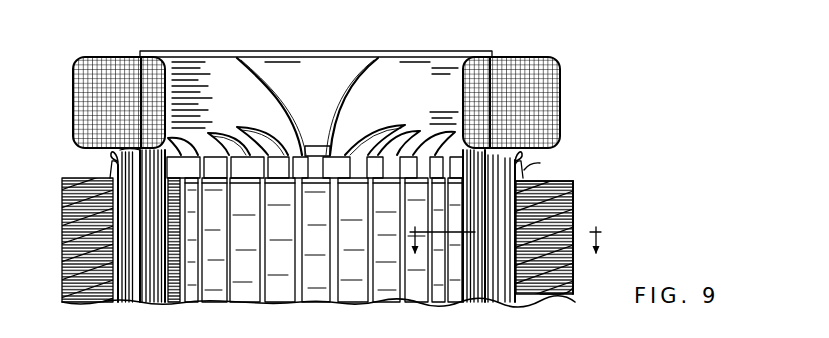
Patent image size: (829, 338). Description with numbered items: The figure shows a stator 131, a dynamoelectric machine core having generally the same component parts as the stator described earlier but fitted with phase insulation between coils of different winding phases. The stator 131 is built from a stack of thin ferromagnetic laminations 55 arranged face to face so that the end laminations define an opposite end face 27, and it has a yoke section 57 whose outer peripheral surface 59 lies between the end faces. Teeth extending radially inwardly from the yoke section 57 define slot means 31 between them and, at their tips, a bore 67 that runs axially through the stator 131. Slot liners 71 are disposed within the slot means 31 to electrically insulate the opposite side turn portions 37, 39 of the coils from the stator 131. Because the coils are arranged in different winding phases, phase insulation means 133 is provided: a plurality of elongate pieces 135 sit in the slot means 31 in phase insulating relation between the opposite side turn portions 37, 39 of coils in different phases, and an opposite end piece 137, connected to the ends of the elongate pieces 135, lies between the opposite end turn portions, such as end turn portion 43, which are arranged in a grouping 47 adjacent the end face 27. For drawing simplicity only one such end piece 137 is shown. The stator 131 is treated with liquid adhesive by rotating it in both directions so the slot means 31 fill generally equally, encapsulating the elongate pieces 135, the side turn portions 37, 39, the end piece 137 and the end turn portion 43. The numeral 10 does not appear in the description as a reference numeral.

The opposite end turn portion 43 is at (103, 62).
The opposite end piece 137 is at (192, 51).
The grouping of end turn portions 47 is at (403, 57).
The phase insulation means 133 is at (660, 33).
The elongate piece 135 is at (112, 158).
The slot liner 71 is at (111, 162).
The opposite side turn portion 37 is at (153, 208).
The bore 67 is at (170, 240).
The slot means 31 is at (110, 268).
The section line 10 is at (440, 255).
The opposite end face 27 is at (573, 183).
The stator 131 is at (697, 200).
The lamination 55 is at (575, 220).
The outer peripheral surface 59 is at (574, 287).
The yoke section 57 is at (548, 287).
The opposite side turn portion 39 is at (500, 290).